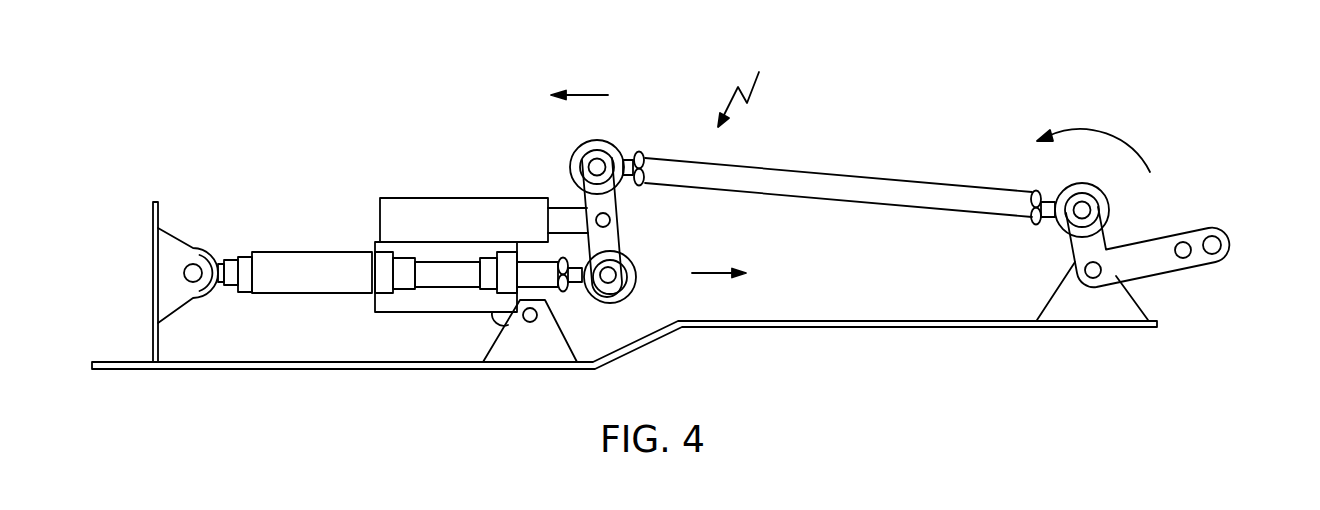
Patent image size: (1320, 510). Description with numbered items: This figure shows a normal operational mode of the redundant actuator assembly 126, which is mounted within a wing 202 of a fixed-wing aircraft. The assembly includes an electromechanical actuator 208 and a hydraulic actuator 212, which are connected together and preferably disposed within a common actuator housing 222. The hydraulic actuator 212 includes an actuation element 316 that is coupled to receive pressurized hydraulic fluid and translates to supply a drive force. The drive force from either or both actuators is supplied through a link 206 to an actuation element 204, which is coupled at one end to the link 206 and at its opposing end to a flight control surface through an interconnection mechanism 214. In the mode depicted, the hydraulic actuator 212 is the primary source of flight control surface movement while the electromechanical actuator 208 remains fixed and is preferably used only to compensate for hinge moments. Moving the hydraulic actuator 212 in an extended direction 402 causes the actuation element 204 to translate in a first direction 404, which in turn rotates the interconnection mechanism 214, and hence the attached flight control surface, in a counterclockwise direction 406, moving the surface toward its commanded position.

The redundant actuator assembly 126 is at (750, 84).
The wing 202 is at (827, 321).
The actuation element 204 is at (793, 170).
The link 206 is at (620, 218).
The electromechanical actuator 208 is at (460, 198).
The hydraulic actuator 212 is at (373, 302).
The interconnection mechanism 214 is at (1157, 237).
The actuator housing 222 is at (373, 245).
The actuation element 316 is at (545, 298).
The extended direction 402 is at (712, 268).
The first direction 404 is at (587, 95).
The counterclockwise direction 406 is at (1098, 130).